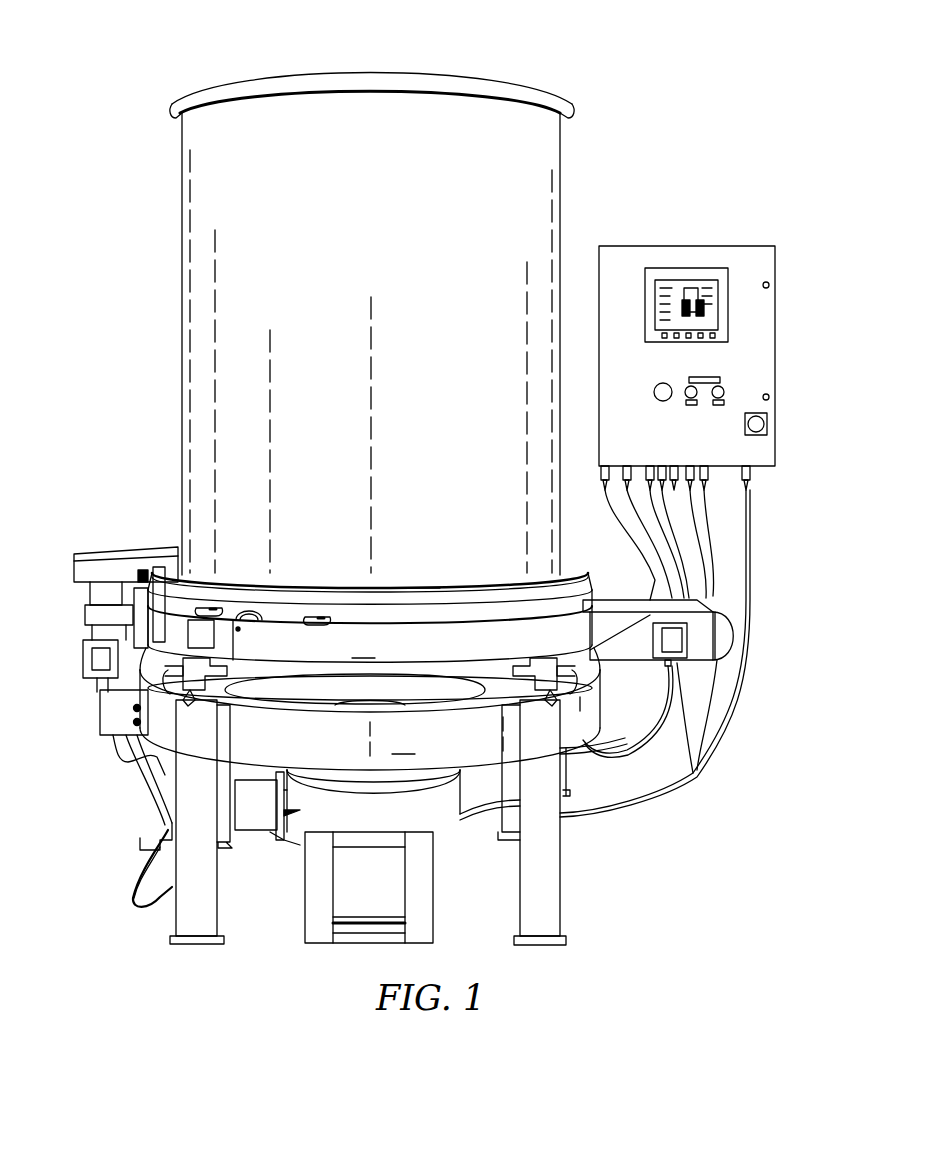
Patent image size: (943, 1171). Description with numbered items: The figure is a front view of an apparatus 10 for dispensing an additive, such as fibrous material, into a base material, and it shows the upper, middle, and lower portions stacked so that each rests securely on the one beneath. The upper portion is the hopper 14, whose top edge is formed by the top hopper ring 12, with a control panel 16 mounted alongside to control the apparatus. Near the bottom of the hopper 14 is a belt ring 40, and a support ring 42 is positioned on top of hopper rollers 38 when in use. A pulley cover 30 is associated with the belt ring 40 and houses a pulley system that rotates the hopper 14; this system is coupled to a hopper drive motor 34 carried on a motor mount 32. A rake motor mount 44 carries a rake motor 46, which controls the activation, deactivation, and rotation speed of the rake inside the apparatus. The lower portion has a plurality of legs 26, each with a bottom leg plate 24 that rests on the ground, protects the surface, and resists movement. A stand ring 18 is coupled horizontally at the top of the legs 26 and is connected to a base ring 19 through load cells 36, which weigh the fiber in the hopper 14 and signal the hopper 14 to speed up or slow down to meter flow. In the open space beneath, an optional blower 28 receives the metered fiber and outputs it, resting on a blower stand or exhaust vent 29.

The apparatus 10 is at (180, 33).
The top hopper ring 12 is at (497, 90).
The hopper 14 is at (213, 198).
The control panel 16 is at (758, 345).
The stand ring 18 is at (370, 709).
The base ring 19 is at (370, 614).
The bottom leg plate 24 is at (192, 940).
The leg 26 is at (548, 888).
The blower 28 is at (325, 818).
The blower stand or exhaust vent 29 is at (315, 918).
The pulley cover 30 is at (106, 553).
The motor mount 32 is at (137, 630).
The hopper drive motor 34 is at (85, 663).
The load cells 36 is at (205, 690).
The hopper rollers 38 is at (232, 596).
The belt ring 40 is at (408, 590).
The support ring 42 is at (570, 566).
The rake motor mount 44 is at (682, 560).
The rake motor 46 is at (705, 640).